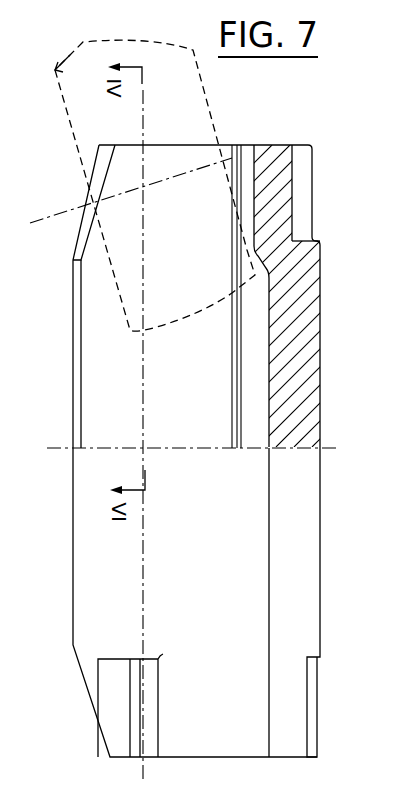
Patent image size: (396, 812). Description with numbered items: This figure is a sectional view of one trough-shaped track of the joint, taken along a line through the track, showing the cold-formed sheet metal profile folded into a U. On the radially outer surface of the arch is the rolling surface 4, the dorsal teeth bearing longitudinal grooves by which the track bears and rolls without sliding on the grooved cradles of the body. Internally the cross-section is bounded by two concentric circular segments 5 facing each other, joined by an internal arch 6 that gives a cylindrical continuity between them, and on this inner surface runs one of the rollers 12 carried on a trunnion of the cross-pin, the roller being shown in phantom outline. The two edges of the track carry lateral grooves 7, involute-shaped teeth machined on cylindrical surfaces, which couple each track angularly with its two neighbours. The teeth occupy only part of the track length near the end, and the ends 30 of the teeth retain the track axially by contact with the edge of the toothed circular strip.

The rollers 12 is at (155, 170).
The rolling surface 4 is at (298, 162).
The ends of the teeth 30 is at (312, 202).
The concentric circular segments 5 is at (170, 366).
The internal arch 6 is at (269, 408).
The grooves 7 is at (118, 710).